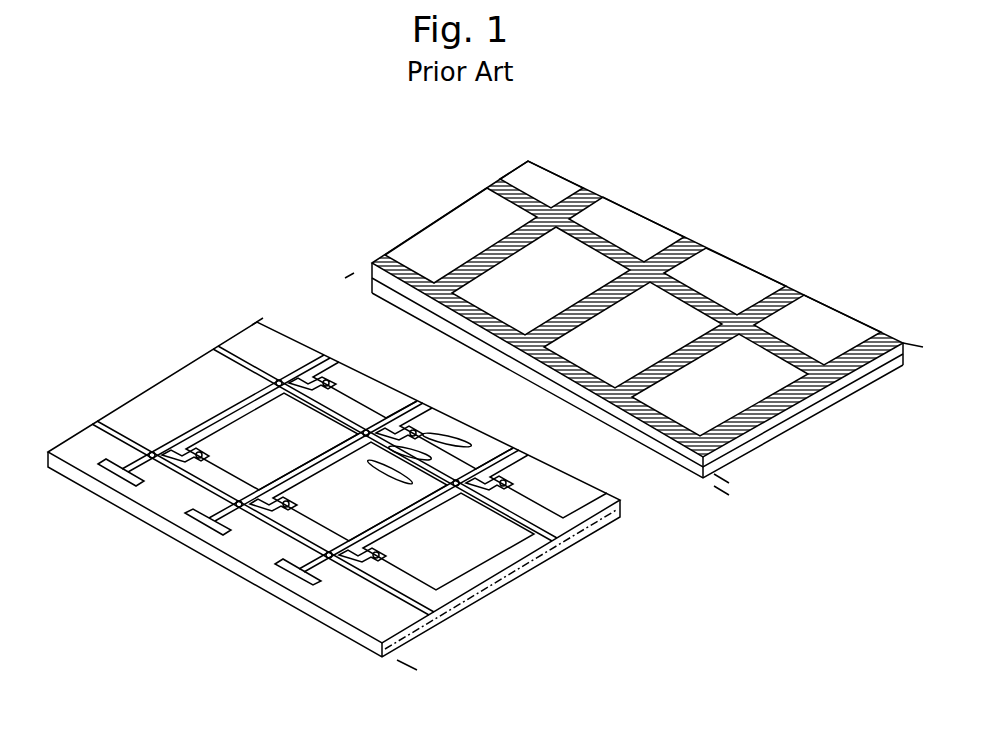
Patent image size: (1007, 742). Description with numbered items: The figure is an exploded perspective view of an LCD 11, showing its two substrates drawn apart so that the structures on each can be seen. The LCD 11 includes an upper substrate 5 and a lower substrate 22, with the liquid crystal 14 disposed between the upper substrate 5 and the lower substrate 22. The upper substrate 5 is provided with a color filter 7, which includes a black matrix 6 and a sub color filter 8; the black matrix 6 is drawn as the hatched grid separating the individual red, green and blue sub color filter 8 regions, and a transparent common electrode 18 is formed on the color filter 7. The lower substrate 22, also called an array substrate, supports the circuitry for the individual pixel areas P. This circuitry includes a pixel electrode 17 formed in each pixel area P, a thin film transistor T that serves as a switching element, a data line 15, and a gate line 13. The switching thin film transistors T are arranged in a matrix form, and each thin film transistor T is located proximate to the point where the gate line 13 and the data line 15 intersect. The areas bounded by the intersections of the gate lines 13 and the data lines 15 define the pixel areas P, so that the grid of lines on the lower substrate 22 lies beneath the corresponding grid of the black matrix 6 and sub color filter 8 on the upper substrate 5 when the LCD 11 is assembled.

The upper substrate 5 is at (753, 433).
The black matrix 6 is at (642, 317).
The color filter 7 is at (634, 362).
The sub color filter 8 is at (840, 330).
The LCD 11 is at (406, 523).
The gate line 13 is at (410, 600).
The liquid crystal 14 is at (500, 460).
The data line 15 is at (310, 562).
The pixel electrode 17 is at (453, 597).
The transparent common electrode 18 is at (740, 457).
The lower substrate 22 is at (207, 547).
The pixel area P is at (500, 567).
The thin film transistor T is at (358, 575).